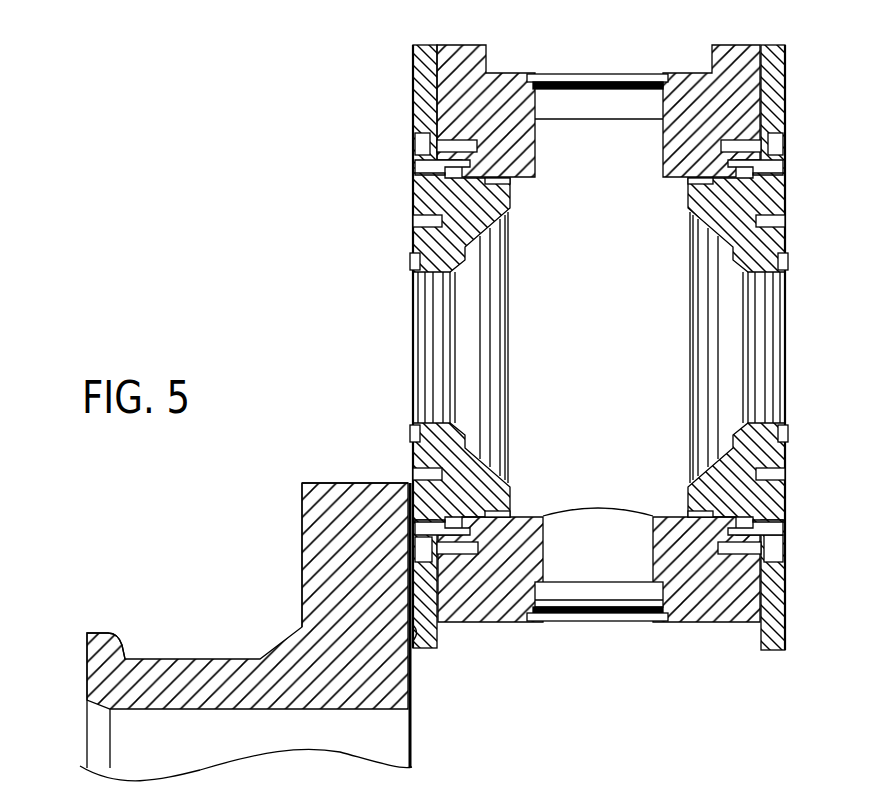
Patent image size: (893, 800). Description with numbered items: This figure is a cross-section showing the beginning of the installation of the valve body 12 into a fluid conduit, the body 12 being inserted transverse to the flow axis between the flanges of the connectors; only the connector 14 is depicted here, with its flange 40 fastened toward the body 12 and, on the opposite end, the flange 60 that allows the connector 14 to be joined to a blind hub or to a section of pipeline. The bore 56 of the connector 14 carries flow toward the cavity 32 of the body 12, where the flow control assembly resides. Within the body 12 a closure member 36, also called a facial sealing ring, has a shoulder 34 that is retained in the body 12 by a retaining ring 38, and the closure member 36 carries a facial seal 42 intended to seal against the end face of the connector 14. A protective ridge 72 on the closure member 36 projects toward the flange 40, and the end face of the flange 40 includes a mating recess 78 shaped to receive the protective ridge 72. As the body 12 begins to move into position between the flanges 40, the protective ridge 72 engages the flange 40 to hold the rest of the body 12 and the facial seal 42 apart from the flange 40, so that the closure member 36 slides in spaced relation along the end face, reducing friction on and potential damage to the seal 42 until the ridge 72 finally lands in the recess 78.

The body 12 is at (683, 77).
The retaining rings 38 is at (420, 90).
The shoulders 34 is at (420, 162).
The protective ridges 72 is at (420, 190).
The facial seals 42 is at (412, 258).
The closure members 36 is at (492, 226).
The cavity 32 is at (605, 492).
The flanges 40 is at (302, 500).
The fluid conduit connector 14 is at (246, 631).
The flanges 60 is at (95, 633).
The bore 56 is at (238, 710).
The mating recesses 78 is at (418, 632).